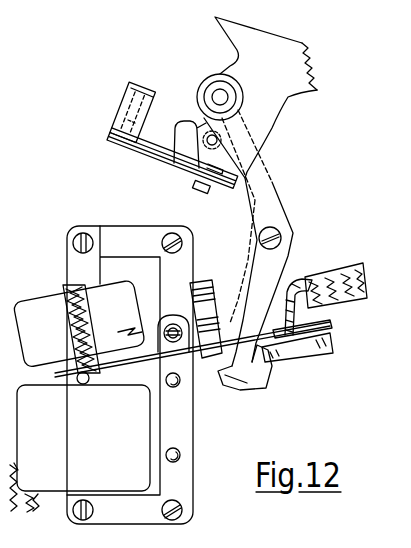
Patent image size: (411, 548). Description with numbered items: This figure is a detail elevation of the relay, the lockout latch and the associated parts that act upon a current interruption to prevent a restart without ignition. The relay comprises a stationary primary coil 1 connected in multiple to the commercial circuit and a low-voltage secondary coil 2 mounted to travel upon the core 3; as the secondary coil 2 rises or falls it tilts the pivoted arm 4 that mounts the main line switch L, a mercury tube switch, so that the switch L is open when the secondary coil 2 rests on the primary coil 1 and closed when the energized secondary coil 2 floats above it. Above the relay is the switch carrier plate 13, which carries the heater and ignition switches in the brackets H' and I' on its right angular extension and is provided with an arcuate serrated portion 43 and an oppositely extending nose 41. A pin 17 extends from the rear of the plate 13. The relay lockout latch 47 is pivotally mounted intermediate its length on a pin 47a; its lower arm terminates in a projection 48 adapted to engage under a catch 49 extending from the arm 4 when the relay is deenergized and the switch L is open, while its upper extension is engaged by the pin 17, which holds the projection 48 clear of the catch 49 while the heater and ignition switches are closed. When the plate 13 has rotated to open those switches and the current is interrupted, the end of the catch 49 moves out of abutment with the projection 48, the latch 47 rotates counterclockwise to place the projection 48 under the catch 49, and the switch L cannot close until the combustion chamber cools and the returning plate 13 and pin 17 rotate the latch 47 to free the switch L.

The primary coil 1 is at (123, 452).
The secondary coil 2 is at (43, 305).
The core 3 is at (170, 421).
The pivoted arm 4 is at (184, 368).
The switch carrier plate 13 is at (219, 71).
The pin 17 is at (203, 130).
The nose 41 is at (207, 18).
The arcuate serrated portion 43 is at (317, 71).
The relay lockout latch 47 is at (253, 238).
The pin 47a is at (283, 228).
The projection 48 is at (262, 388).
The catch 49 is at (325, 325).
The bracket H' is at (108, 107).
The bracket I' is at (147, 161).
The main line switch L is at (296, 286).